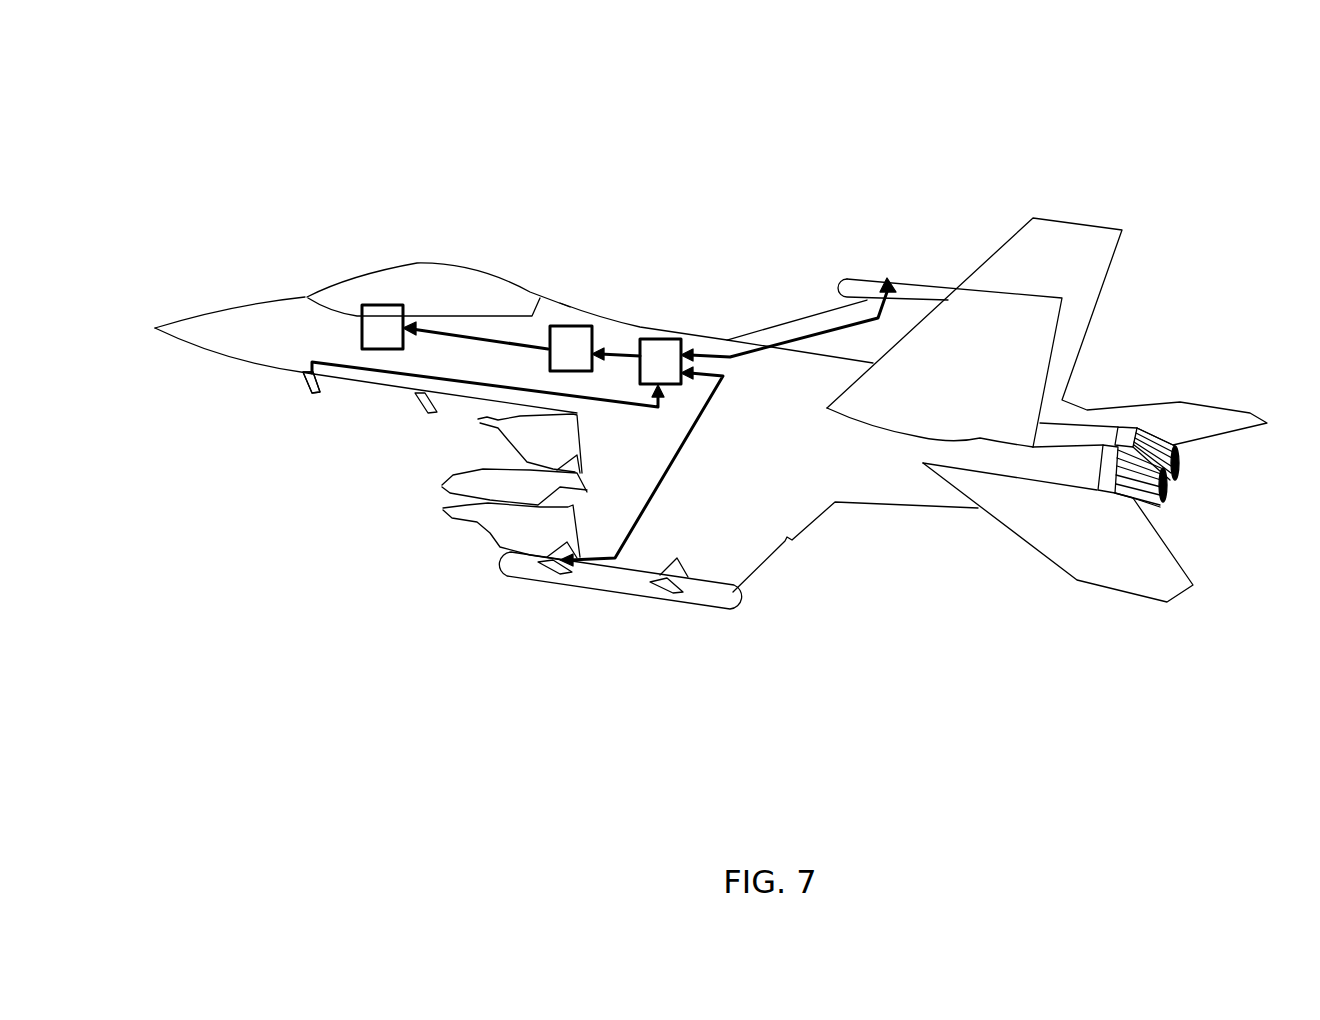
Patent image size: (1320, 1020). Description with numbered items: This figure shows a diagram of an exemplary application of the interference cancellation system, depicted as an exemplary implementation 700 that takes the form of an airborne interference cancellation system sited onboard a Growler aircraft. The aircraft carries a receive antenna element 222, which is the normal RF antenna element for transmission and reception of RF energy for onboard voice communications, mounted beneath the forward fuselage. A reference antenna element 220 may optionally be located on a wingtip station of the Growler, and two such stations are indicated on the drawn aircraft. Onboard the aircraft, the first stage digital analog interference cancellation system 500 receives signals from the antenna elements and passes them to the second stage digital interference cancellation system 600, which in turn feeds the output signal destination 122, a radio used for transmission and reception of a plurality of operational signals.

The exemplary implementation 700 is at (205, 149).
The output signal destination 122 is at (382, 305).
The second stage digital interference cancellation system 600 is at (572, 326).
The first stage digital analog interference cancellation system 500 is at (662, 339).
The reference antenna element 220 is at (552, 570).
The receive antenna element 222 is at (313, 396).